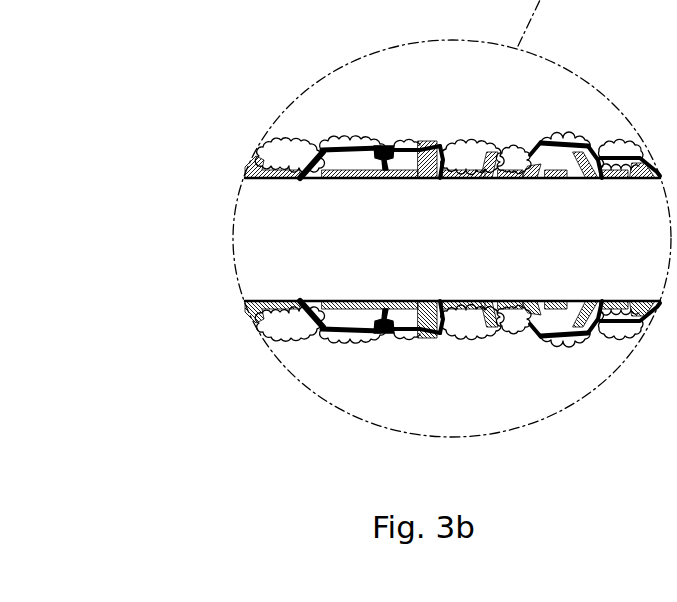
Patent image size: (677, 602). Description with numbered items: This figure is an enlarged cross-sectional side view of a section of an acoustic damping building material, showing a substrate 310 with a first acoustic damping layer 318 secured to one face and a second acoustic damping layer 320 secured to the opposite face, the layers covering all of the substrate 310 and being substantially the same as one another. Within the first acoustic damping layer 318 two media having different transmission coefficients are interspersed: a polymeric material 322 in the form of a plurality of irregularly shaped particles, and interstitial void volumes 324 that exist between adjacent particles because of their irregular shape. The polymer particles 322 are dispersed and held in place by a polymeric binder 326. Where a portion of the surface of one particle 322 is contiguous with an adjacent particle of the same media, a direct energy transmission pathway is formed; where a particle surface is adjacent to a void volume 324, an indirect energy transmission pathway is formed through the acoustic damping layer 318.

The substrate 310 is at (440, 257).
The first acoustic damping layer 318 is at (245, 173).
The second acoustic damping layer 320 is at (250, 307).
The polymeric material 322 is at (268, 140).
The interstitial void volumes 324 is at (435, 142).
The polymeric binder 326 is at (427, 0).